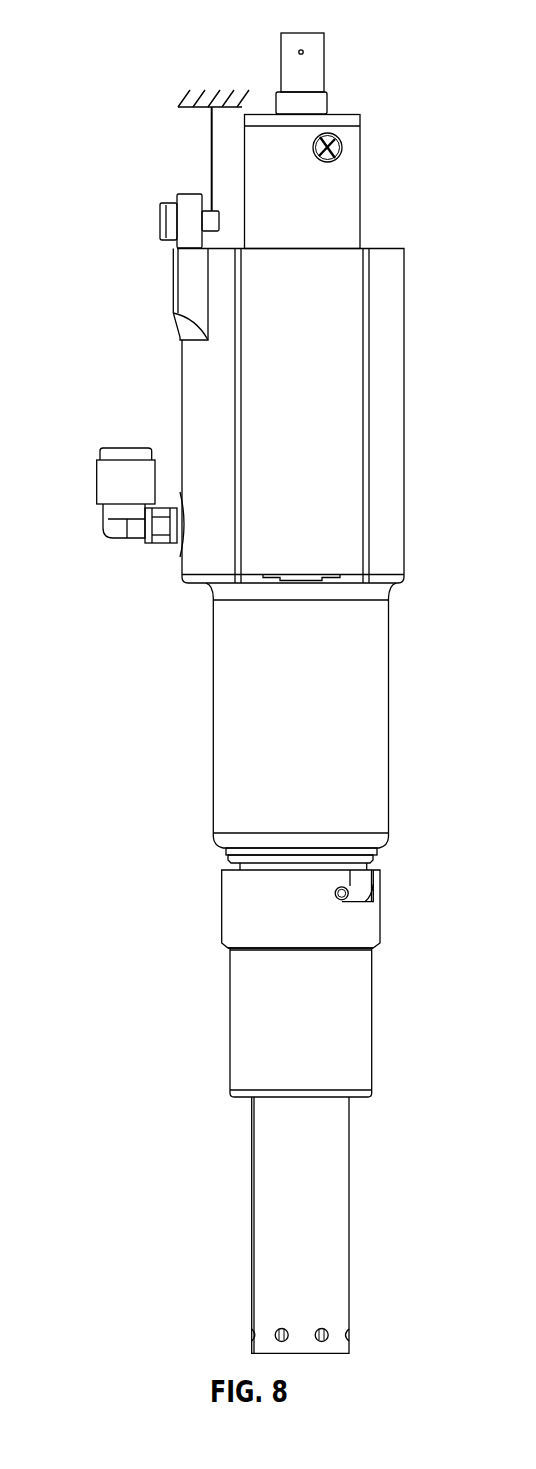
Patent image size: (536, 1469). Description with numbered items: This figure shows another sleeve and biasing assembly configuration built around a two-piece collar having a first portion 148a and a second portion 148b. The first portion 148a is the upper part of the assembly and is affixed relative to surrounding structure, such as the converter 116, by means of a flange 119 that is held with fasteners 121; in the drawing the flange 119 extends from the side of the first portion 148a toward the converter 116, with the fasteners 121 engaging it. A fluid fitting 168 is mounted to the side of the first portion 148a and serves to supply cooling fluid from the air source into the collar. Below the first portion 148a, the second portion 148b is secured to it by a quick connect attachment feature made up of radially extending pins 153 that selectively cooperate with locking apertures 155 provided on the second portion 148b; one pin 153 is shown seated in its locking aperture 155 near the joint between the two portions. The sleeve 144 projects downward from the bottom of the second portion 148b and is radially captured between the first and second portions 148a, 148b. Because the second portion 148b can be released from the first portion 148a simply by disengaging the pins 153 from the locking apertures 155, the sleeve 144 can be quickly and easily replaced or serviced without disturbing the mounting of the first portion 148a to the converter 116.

The converter 116 is at (202, 108).
The fasteners 121 is at (162, 204).
The flange 119 is at (178, 243).
The first portion 148a is at (383, 455).
The fluid fitting 168 is at (112, 480).
The locking apertures 155 is at (373, 886).
The radially extending pins 153 is at (333, 890).
The second portion 148b is at (353, 1020).
The sleeve 144 is at (337, 1200).